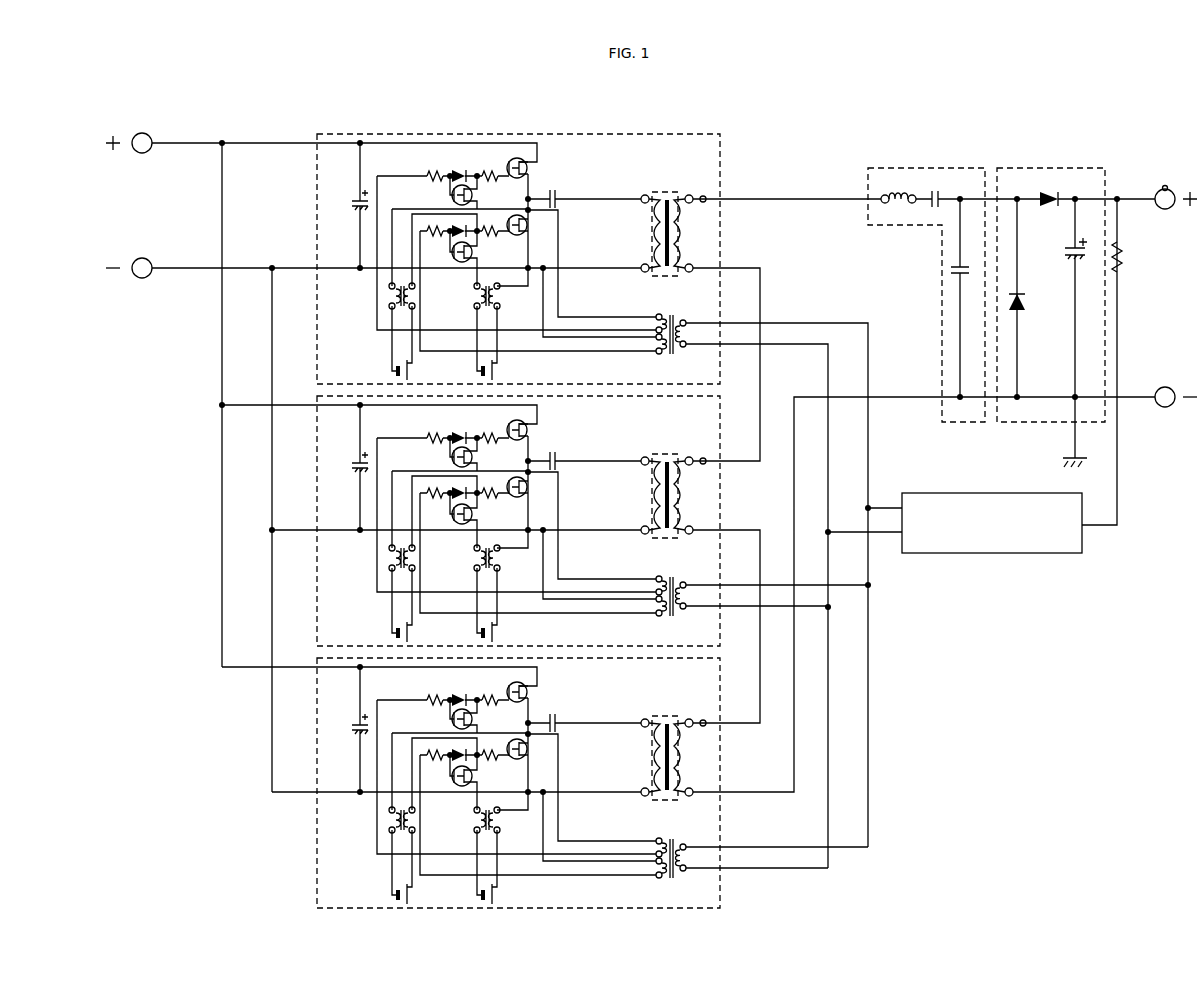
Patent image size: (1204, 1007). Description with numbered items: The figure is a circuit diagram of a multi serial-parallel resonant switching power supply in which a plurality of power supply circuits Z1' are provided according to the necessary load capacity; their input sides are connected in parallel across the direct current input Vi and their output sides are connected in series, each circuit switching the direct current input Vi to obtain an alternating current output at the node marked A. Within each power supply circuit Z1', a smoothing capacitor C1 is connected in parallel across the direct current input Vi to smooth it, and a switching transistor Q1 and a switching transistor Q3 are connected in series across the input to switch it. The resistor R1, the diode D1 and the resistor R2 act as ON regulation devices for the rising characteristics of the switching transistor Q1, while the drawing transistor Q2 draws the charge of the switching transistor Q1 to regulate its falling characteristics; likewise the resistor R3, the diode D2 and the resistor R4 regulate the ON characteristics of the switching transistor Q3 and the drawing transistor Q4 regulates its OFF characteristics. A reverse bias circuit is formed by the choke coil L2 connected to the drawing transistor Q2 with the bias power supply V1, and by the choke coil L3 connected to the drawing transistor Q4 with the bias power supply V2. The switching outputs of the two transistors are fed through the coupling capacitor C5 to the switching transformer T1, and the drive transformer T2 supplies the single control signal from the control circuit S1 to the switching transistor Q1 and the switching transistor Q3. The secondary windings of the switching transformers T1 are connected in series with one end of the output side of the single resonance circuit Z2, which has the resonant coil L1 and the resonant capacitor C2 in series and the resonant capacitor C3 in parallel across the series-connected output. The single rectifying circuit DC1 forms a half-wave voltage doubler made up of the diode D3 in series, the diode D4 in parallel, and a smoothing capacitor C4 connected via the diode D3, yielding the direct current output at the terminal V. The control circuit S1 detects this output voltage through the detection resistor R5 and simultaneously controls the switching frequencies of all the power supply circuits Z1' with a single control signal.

The direct current input Vi is at (129, 134).
The smoothing capacitor C1 is at (348, 467).
The resistor (ON regulation device) R1 is at (428, 431).
The diode (ON regulation device) D1 is at (457, 431).
The resistor (ON regulation device) R2 is at (489, 431).
The switching transistor Q1 is at (528, 435).
The drawing transistor Q2 is at (475, 458).
The coupling capacitor C5 is at (559, 450).
The resistor (ON regulation device) R3 is at (430, 487).
The diode (ON regulation device) D2 is at (456, 487).
The resistor (ON regulation device) R4 is at (489, 487).
The switching transistor Q3 is at (528, 492).
The drawing transistor Q4 is at (472, 513).
The choke coil L2 is at (385, 558).
The choke coil L3 is at (477, 558).
The bias power supply V1 is at (416, 632).
The bias power supply V2 is at (501, 632).
The switching transformer T1 is at (667, 489).
The drive transformer T2 is at (671, 588).
The node A is at (704, 452).
The power supply circuit Z1' is at (550, 520).
The resonance circuit Z2 is at (913, 163).
The resonant coil L1 is at (898, 188).
The resonant capacitor C2 is at (978, 190).
The resonant capacitor C3 is at (968, 298).
The rectifying circuit DC1 is at (1040, 163).
The diode D3 is at (1097, 190).
The diode D4 is at (1028, 298).
The output capacitor C4 is at (1083, 333).
The detection resistor R5 is at (1130, 257).
The output voltage terminal V is at (1176, 185).
The control circuit S1 is at (1028, 556).